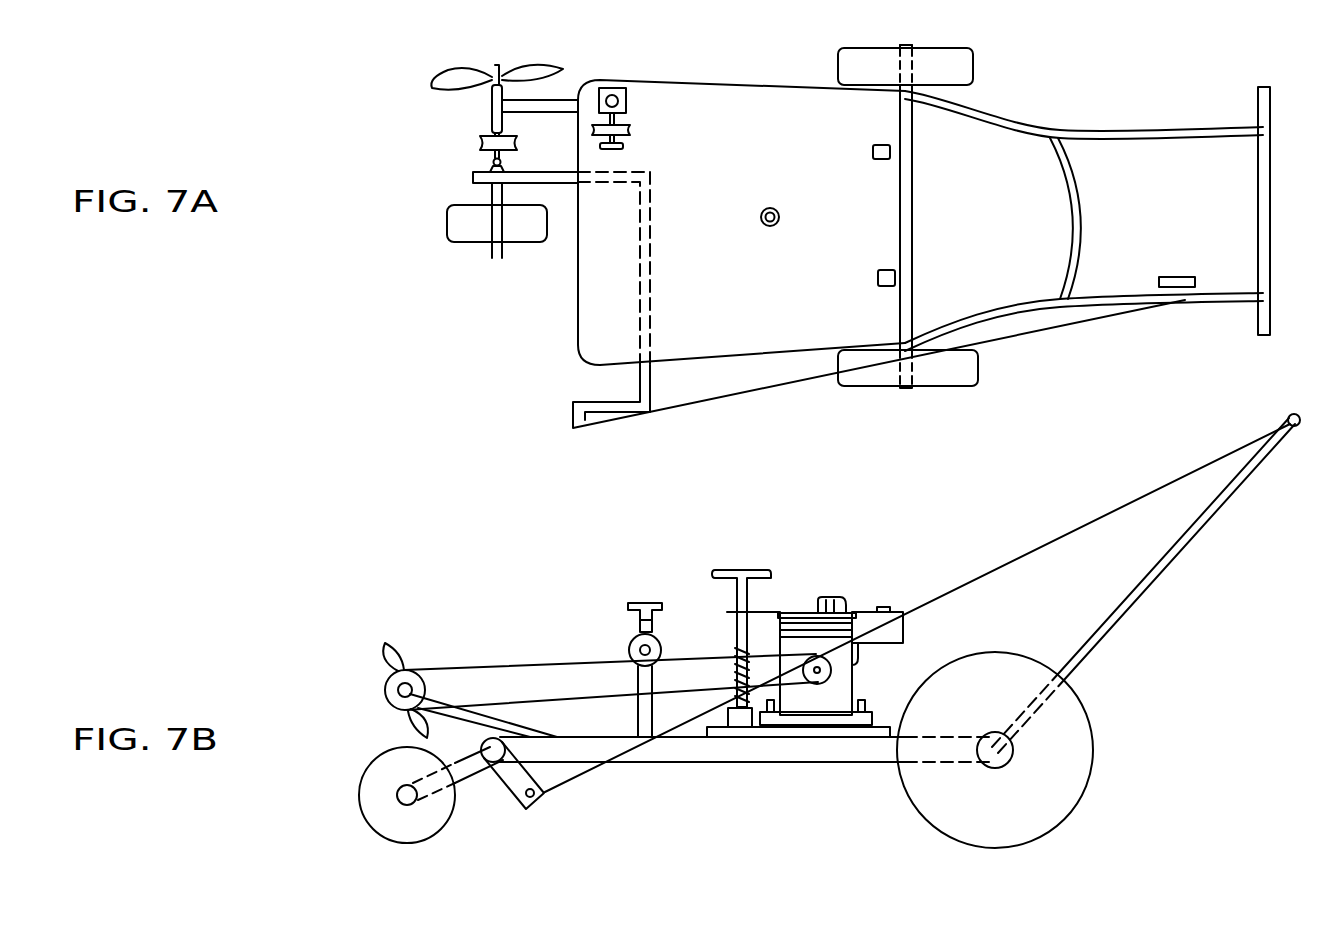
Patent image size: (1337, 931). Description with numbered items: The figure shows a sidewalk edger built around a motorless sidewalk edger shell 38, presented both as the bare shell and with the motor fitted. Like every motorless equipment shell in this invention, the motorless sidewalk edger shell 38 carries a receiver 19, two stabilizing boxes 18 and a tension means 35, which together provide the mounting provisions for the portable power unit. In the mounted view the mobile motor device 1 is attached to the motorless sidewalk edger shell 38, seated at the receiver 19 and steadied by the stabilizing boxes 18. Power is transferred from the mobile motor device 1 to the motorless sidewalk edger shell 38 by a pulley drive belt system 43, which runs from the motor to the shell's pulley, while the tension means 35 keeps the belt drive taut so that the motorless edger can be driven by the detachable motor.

In FIG. 7B, the mobile motor device 1 is at (859, 610).
In FIG. 7A, the stabilizing boxes 18 is at (875, 159).
In FIG. 7A, the receiver 19 is at (762, 212).
In FIG. 7A, the tension means 35 is at (627, 148).
In FIG. 7A, the motorless sidewalk edger shell 38 is at (682, 76).
In FIG. 7B, the motorless sidewalk edger shell 38 is at (660, 764).
In FIG. 7B, the pulley drive belt system 43 is at (440, 666).